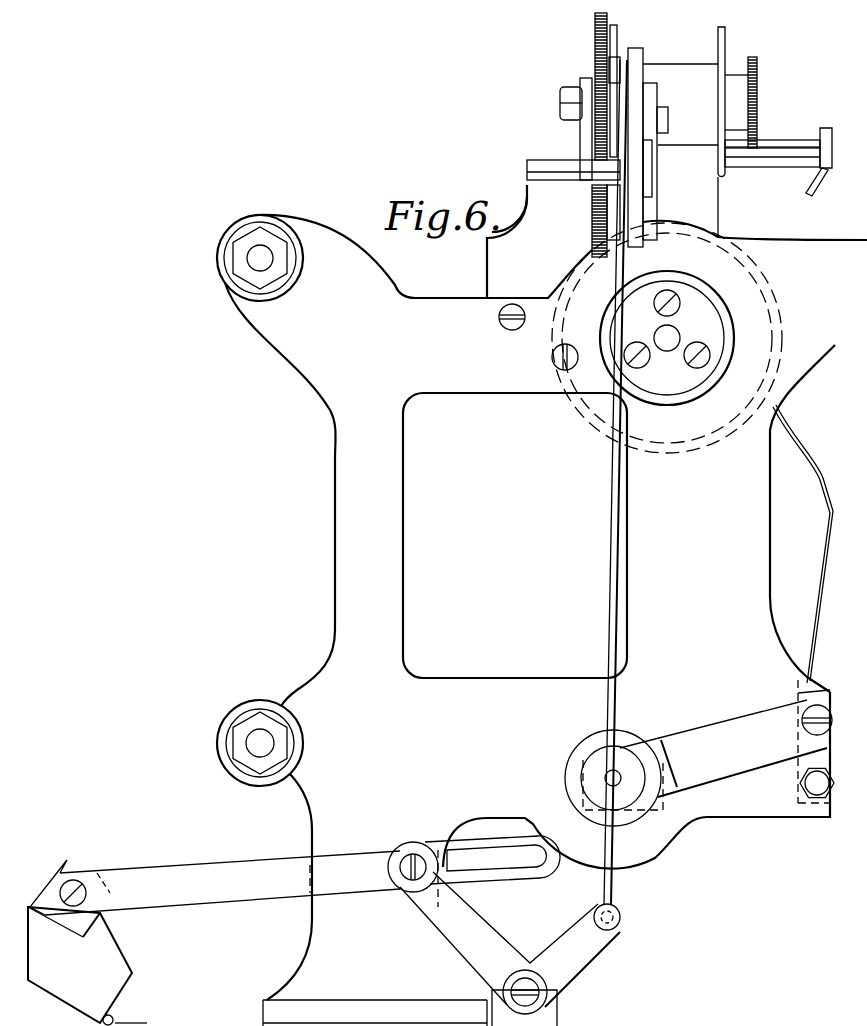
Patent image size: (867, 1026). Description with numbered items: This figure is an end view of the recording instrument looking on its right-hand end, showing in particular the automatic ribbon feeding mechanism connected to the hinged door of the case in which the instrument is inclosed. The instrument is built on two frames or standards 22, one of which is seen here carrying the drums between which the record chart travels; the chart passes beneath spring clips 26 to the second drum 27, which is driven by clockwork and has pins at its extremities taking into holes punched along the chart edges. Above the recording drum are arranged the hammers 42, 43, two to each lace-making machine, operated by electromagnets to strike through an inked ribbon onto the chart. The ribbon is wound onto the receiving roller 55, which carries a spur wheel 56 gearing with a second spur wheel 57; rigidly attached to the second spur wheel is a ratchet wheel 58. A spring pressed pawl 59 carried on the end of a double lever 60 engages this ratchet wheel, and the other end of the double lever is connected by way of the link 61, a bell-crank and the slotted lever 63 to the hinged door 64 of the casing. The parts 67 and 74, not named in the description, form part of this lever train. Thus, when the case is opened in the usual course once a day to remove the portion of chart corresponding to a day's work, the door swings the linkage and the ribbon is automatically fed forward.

The frame 22 is at (340, 436).
The spring clip 26 is at (800, 458).
The second drum 27 is at (598, 428).
The hammer 42 is at (789, 160).
The hammer 43 is at (780, 140).
The receiving roller 55 is at (730, 36).
The spur wheel 56 is at (595, 52).
The second spur wheel 57 is at (598, 203).
The ratchet wheel 58 is at (612, 215).
The spring pressed pawl 59 is at (648, 232).
The double lever 60 is at (645, 78).
The link 61 is at (612, 582).
The slotted lever 63 is at (365, 852).
The hinged door 64 is at (97, 963).
The link 67 is at (553, 940).
The arm 74 is at (640, 818).